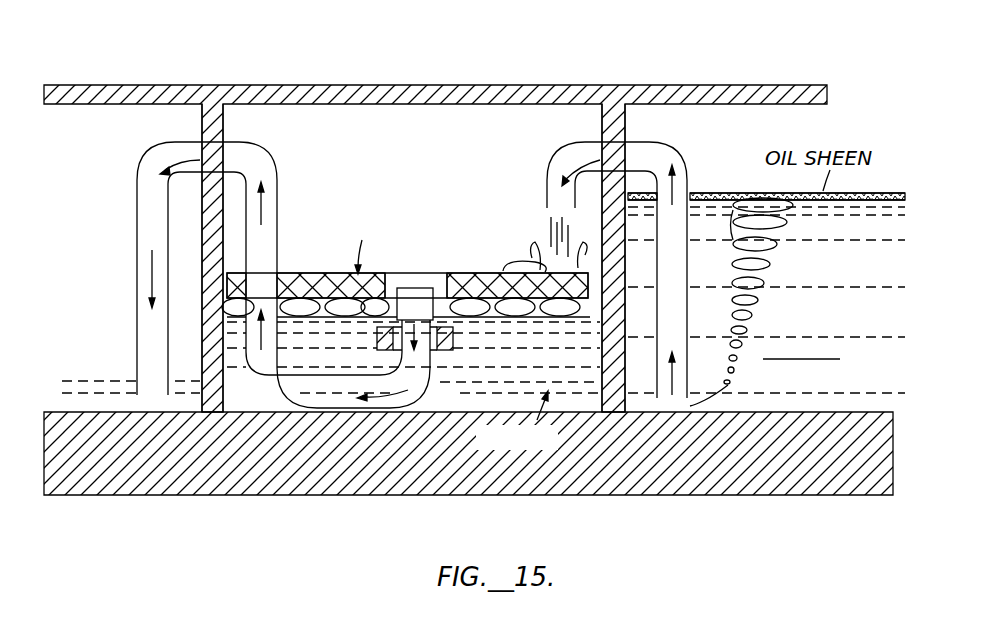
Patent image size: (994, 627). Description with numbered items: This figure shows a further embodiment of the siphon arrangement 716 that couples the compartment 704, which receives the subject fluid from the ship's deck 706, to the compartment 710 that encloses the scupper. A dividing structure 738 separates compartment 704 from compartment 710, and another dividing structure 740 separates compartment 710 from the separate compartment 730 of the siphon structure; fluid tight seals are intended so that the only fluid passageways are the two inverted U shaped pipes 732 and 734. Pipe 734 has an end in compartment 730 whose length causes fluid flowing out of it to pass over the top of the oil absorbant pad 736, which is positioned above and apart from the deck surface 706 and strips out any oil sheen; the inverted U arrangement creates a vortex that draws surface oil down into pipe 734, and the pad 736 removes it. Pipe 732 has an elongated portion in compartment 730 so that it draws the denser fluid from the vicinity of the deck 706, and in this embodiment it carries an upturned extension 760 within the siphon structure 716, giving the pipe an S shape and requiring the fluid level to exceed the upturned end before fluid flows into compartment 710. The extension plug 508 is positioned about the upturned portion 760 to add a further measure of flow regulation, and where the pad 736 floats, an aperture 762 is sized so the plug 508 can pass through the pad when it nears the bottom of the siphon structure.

The compartment 704 is at (747, 106).
The siphon arrangement 716 is at (435, 229).
The dividing structure 740 is at (224, 113).
The dividing structure 738 is at (626, 117).
The ship's deck 706 is at (535, 496).
The inverted U shaped pipe 732 is at (310, 275).
The inverted U shaped pipe 734 is at (582, 143).
The upturned extension 760 is at (418, 402).
The aperture 762 is at (397, 275).
The extension plug 508 is at (377, 345).
The oil absorbant pad 736 is at (318, 285).
The compartment 730 is at (543, 381).
The compartment 710 is at (62, 277).